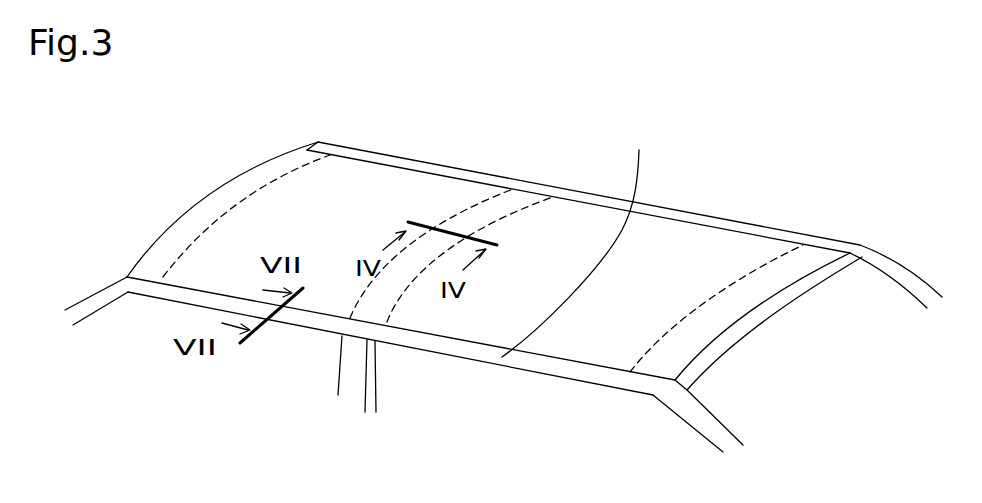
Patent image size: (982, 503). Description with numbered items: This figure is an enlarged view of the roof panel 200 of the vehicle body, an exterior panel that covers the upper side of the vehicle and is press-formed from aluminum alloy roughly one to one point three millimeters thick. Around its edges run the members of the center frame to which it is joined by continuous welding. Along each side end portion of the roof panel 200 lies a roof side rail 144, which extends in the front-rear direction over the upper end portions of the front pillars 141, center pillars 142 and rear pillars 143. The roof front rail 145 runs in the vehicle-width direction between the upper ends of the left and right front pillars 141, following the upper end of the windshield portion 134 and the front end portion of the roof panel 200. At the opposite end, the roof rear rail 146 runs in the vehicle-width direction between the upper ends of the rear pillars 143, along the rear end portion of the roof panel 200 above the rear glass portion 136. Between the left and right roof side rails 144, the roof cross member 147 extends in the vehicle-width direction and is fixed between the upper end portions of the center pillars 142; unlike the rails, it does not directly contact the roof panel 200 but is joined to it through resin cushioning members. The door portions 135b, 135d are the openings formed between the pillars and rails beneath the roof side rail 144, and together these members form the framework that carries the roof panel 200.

The roof panel 200 is at (683, 247).
The roof front rail 145 is at (277, 158).
The roof rear rail 146 is at (848, 263).
The roof cross member 147 is at (517, 198).
The roof side rail 144 is at (624, 152).
The front pillar 141 is at (97, 300).
The center pillar 142 is at (352, 383).
The rear pillar 143 is at (913, 273).
The windshield portion 134 is at (130, 251).
The rear glass portion 136 is at (893, 343).
The door portion 135b is at (306, 399).
The door portion 135d is at (465, 415).